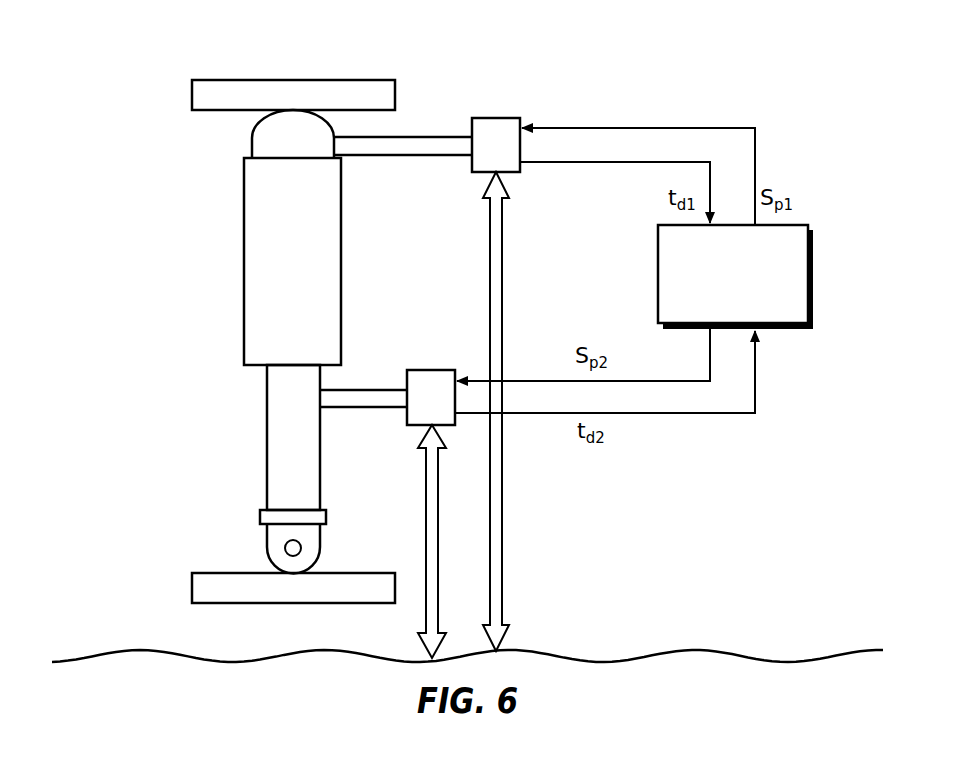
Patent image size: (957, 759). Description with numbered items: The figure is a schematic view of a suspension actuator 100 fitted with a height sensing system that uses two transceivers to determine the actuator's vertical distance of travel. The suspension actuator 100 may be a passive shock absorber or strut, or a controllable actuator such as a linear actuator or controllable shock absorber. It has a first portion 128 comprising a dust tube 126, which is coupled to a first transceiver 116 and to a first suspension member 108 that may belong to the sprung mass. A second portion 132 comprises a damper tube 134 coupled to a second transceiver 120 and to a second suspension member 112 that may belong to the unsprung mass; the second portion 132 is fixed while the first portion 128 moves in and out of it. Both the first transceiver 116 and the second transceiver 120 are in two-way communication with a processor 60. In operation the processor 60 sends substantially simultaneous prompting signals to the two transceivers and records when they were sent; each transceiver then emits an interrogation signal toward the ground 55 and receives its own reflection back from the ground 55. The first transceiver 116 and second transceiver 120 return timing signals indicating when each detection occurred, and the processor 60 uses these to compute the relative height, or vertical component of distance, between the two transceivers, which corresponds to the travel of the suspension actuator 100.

The ground 55 is at (80, 655).
The processor 60 is at (813, 240).
The suspension actuator 100 is at (133, 243).
The first suspension member 108 is at (215, 80).
The second suspension member 112 is at (192, 590).
The first transceiver 116 is at (492, 118).
The second transceiver 120 is at (425, 370).
The dust tube 126 is at (244, 338).
The first portion 128 is at (268, 235).
The second portion 132 is at (220, 469).
The damper tube 134 is at (267, 460).